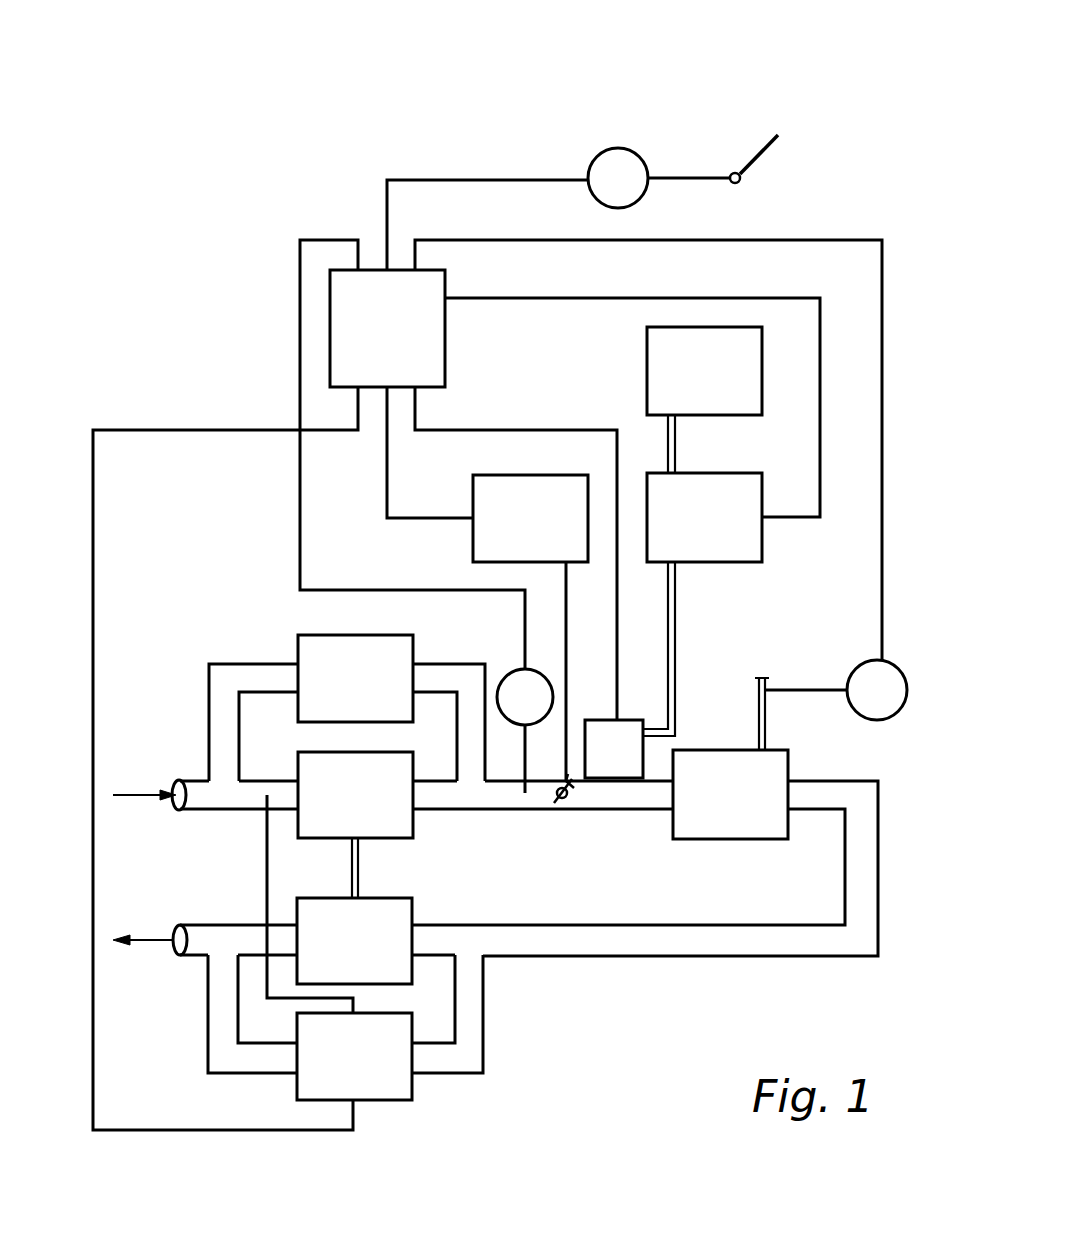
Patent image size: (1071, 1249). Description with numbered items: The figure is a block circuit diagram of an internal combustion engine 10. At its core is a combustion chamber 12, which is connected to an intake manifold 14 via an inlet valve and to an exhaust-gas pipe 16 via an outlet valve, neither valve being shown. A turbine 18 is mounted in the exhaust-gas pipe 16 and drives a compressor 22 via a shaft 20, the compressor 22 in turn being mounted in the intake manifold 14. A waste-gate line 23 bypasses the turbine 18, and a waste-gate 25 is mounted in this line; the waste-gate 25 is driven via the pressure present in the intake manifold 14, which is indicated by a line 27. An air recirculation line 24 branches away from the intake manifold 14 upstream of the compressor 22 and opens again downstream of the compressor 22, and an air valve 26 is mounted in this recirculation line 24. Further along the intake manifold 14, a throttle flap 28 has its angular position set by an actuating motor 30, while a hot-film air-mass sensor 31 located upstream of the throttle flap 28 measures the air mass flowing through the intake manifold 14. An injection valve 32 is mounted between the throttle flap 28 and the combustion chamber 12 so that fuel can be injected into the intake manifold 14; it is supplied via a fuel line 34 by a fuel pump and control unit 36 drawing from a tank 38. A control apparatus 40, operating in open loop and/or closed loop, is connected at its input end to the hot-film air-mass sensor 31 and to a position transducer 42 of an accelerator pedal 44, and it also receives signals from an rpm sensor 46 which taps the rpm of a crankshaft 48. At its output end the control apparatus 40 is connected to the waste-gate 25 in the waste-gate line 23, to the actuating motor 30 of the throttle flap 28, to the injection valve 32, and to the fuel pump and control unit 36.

The internal combustion engine 10 is at (326, 165).
The combustion chamber 12 is at (747, 810).
The intake manifold 14 is at (507, 800).
The exhaust-gas pipe 16 is at (677, 947).
The turbine 18 is at (372, 957).
The shaft 20 is at (360, 865).
The compressor 22 is at (373, 810).
The waste-gate line 23 is at (448, 1064).
The air recirculation line 24 is at (241, 675).
The waste-gate 25 is at (372, 1073).
The air valve 26 is at (373, 693).
The line 27 is at (266, 865).
The throttle flap 28 is at (568, 812).
The actuating motor 30 is at (548, 532).
The hot-film air-mass sensor 31 is at (542, 710).
The injection valve 32 is at (632, 766).
The fuel line 34 is at (675, 633).
The fuel pump and control unit 36 is at (722, 534).
The tank 38 is at (722, 387).
The control apparatus 40 is at (404, 343).
The position transducer 42 is at (634, 193).
The accelerator pedal 44 is at (770, 178).
The rpm sensor 46 is at (895, 705).
The crankshaft 48 is at (766, 718).